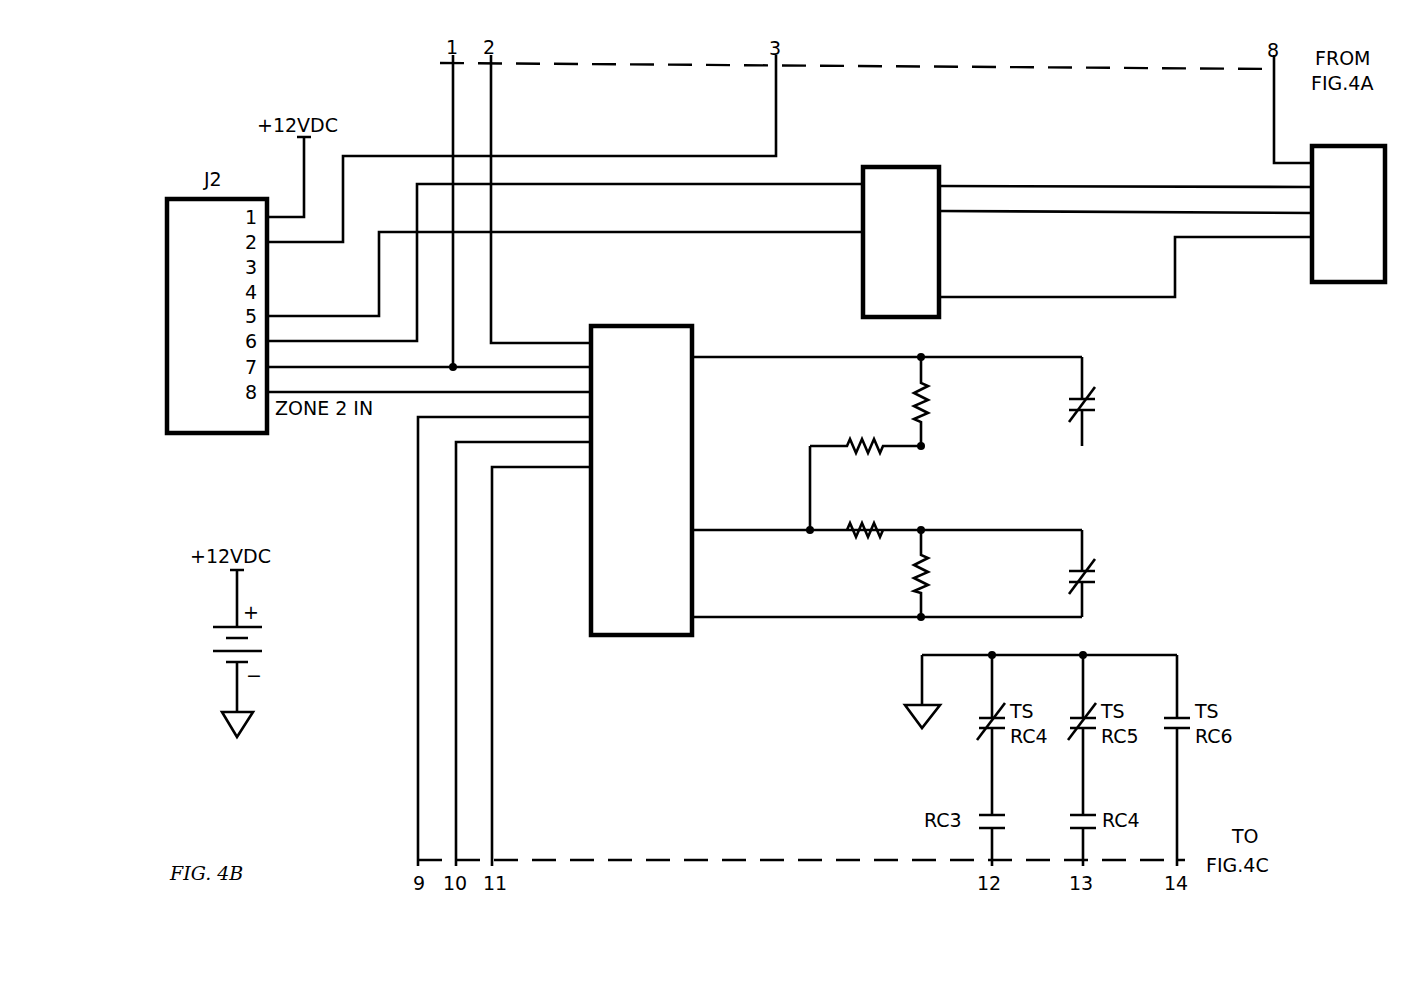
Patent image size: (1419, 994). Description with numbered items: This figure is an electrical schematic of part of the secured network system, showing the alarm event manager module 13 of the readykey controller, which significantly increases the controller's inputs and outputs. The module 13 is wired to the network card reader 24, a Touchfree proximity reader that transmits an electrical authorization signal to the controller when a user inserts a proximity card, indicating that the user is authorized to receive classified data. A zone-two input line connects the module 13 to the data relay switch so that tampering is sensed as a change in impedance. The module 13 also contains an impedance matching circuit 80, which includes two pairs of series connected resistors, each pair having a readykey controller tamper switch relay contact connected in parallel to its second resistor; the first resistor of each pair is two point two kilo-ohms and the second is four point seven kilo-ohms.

The alarm event manager module 13 is at (603, 622).
The network card reader 24 is at (1332, 268).
The impedance matching circuit 80 is at (1143, 472).